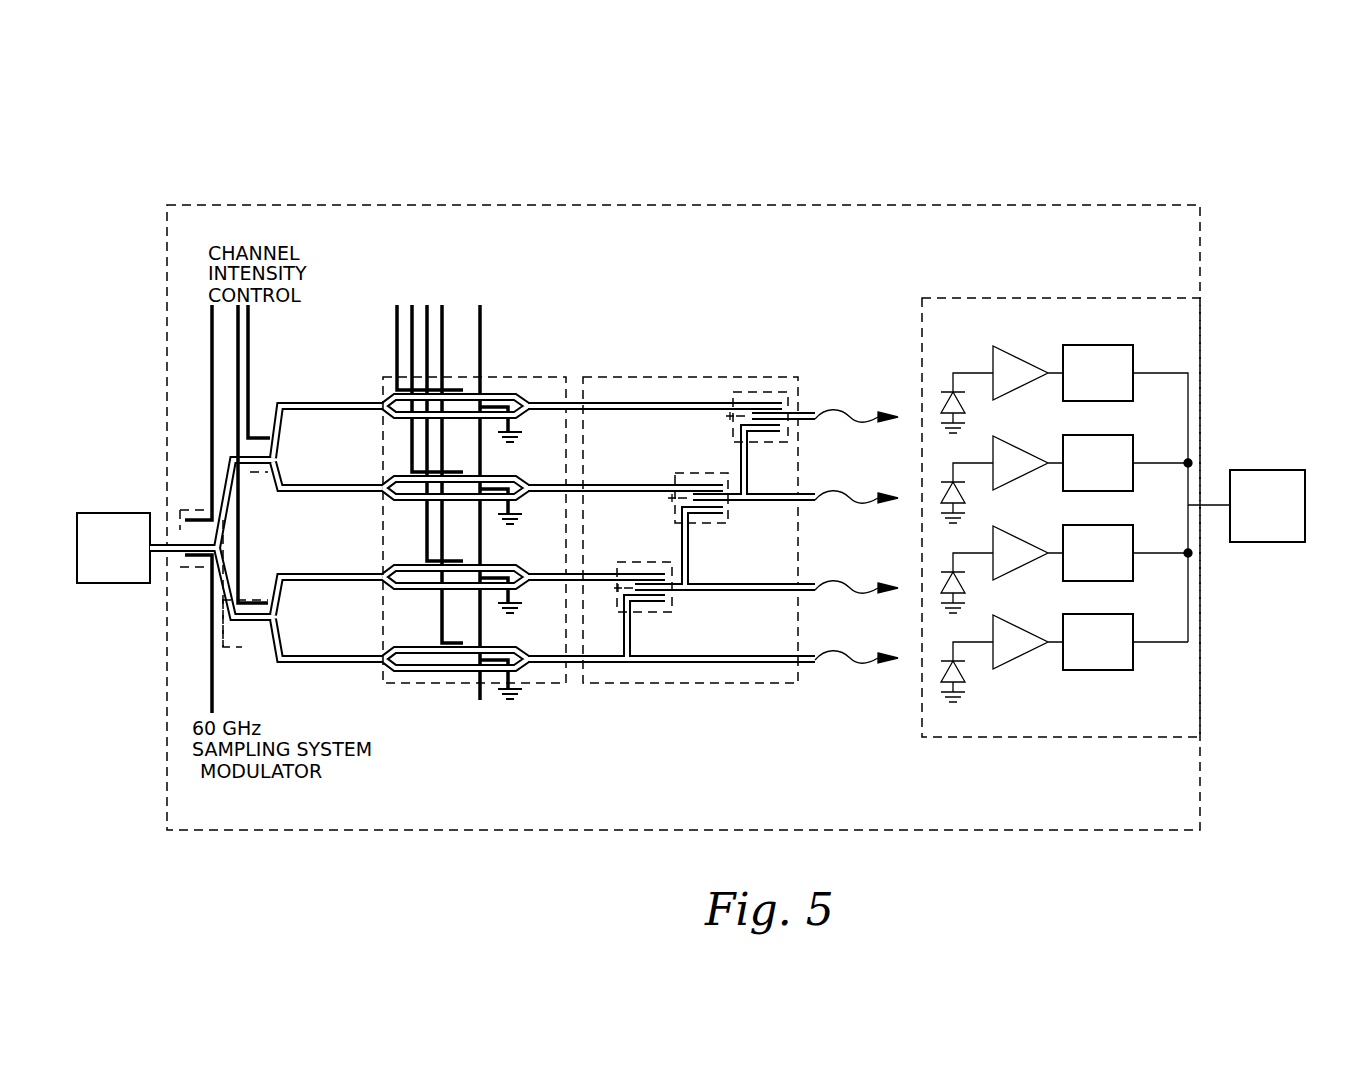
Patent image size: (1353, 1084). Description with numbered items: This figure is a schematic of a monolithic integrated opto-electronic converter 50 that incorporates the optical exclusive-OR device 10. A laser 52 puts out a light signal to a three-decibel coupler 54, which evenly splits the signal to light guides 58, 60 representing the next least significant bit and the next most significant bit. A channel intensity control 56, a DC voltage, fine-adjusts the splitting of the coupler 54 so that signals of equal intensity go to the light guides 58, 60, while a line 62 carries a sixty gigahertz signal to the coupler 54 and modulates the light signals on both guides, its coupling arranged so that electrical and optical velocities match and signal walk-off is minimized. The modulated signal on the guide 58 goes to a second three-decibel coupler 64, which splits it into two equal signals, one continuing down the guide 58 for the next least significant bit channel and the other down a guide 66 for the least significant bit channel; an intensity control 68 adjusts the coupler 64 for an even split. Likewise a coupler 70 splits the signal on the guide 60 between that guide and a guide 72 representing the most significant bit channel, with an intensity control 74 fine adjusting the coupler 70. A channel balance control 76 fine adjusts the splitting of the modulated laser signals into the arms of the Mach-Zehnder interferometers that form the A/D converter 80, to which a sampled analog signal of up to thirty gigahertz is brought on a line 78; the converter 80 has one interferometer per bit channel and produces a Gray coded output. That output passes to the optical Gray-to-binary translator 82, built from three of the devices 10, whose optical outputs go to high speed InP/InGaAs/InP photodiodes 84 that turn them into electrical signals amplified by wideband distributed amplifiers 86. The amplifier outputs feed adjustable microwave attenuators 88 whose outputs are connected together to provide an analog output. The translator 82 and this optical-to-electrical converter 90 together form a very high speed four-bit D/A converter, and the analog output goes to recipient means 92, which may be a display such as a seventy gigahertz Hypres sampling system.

The device 10 is at (774, 446).
The monolithic integrated opto-electronic converter 50 is at (1031, 160).
The laser 52 is at (107, 583).
The 3 dB coupler 54 is at (184, 497).
The channel intensity control 56 is at (209, 365).
The light guide 58 is at (283, 484).
The light guide 60 is at (284, 585).
The line 62 is at (209, 618).
The 3 dB coupler 64 is at (283, 442).
The light guide 66 is at (343, 414).
The intensity control 68 is at (252, 357).
The coupler 70 is at (212, 668).
The light guide 72 is at (288, 662).
The intensity control 74 is at (249, 322).
The channel balance control 76 is at (388, 362).
The line 78 is at (481, 332).
The A/D converter 80 is at (541, 376).
The optical Gray-to-binary translator 82 is at (679, 376).
The InP/InGaAs/InP photodiodes 84 is at (965, 413).
The wideband distributed amplifiers 86 is at (1020, 360).
The adjustable microwave attenuators 88 is at (1134, 362).
The optical-to-electrical converter 90 is at (1119, 297).
The recipient means 92 is at (1262, 542).